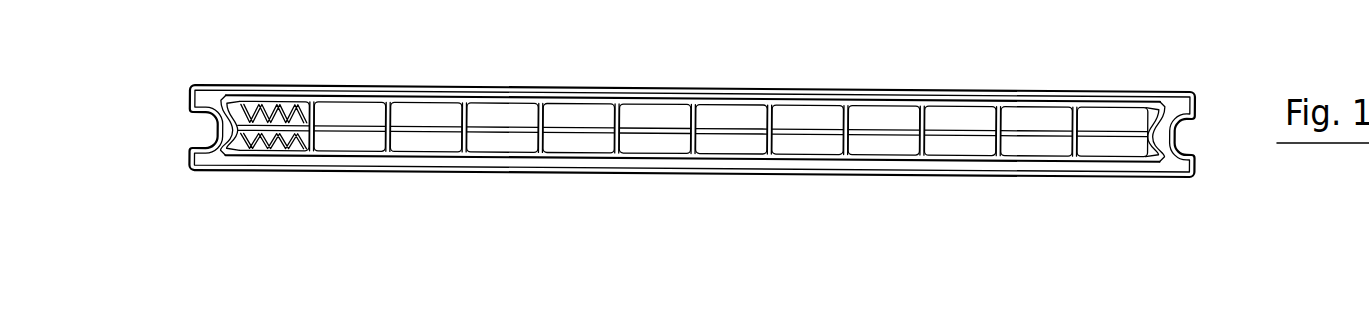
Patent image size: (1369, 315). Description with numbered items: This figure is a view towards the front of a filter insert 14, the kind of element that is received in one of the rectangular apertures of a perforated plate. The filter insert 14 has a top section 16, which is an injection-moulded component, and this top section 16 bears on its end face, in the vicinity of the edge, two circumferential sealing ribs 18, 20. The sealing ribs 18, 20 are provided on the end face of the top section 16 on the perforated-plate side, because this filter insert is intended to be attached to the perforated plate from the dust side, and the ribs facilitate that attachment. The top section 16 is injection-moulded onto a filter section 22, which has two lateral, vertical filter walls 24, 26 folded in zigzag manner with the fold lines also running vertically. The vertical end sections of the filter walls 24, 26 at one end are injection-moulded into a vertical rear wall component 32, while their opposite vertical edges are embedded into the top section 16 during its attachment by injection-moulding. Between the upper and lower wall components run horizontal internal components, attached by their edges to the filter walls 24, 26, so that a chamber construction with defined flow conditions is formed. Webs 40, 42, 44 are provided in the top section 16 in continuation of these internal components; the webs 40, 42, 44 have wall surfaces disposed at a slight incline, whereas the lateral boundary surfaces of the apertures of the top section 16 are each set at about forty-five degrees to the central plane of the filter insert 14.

The filter insert 14 is at (745, 121).
The top section 16 is at (692, 131).
The sealing rib 18 is at (693, 128).
The sealing rib 20 is at (691, 131).
The filter section 22 is at (947, 140).
The filter wall 24 is at (263, 143).
The filter wall 26 is at (311, 106).
The rear wall component 32 is at (438, 112).
The web 40 is at (315, 137).
The web 42 is at (390, 143).
The web 44 is at (468, 140).